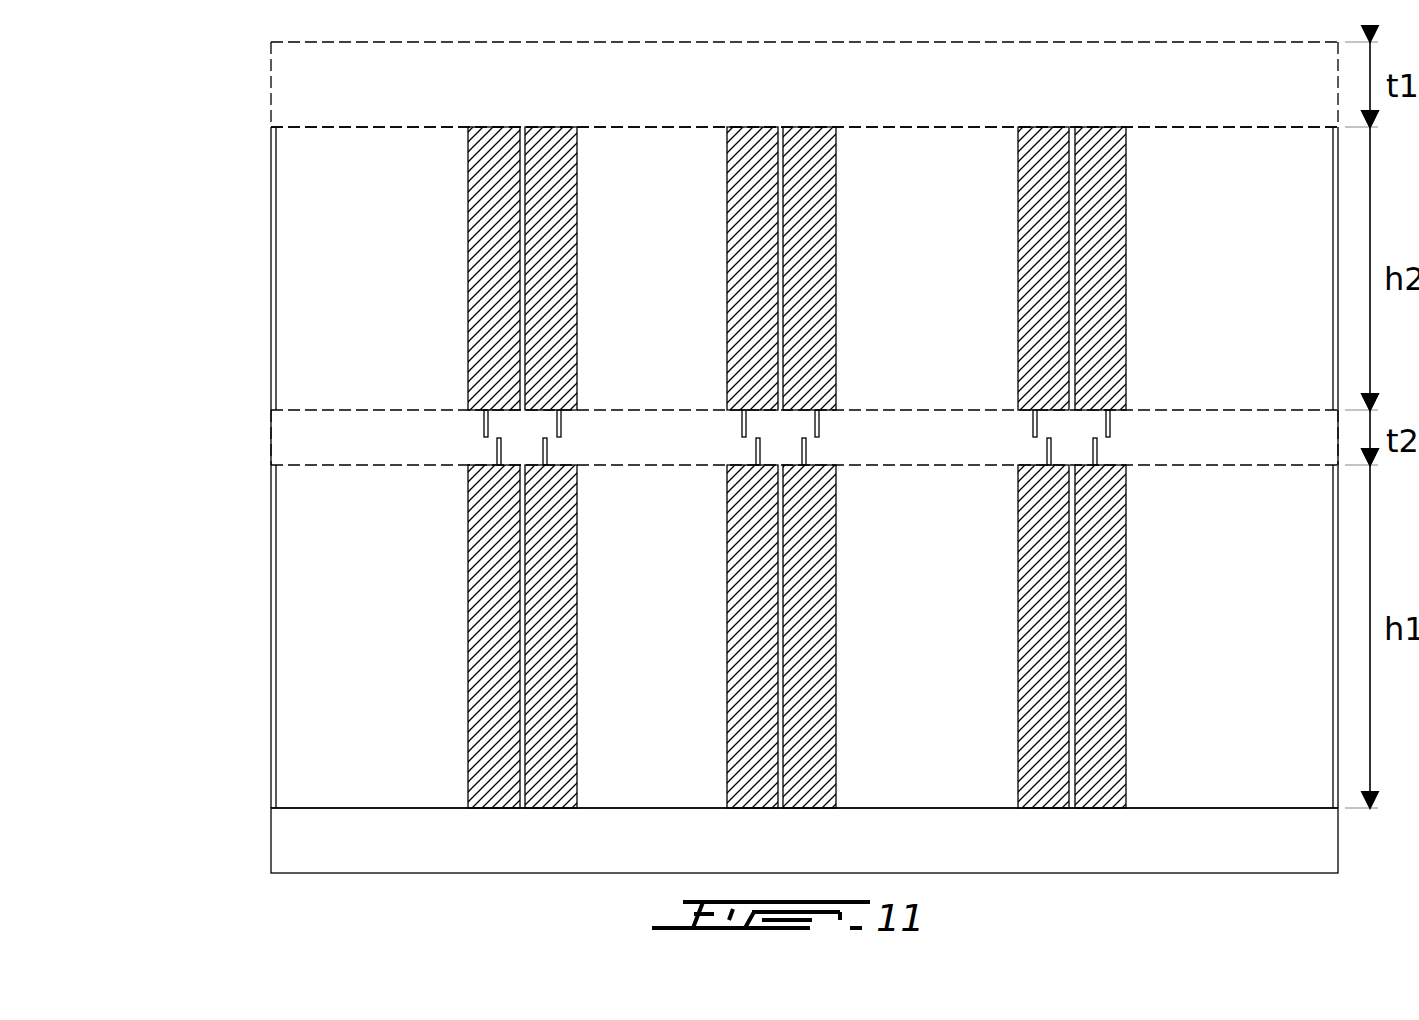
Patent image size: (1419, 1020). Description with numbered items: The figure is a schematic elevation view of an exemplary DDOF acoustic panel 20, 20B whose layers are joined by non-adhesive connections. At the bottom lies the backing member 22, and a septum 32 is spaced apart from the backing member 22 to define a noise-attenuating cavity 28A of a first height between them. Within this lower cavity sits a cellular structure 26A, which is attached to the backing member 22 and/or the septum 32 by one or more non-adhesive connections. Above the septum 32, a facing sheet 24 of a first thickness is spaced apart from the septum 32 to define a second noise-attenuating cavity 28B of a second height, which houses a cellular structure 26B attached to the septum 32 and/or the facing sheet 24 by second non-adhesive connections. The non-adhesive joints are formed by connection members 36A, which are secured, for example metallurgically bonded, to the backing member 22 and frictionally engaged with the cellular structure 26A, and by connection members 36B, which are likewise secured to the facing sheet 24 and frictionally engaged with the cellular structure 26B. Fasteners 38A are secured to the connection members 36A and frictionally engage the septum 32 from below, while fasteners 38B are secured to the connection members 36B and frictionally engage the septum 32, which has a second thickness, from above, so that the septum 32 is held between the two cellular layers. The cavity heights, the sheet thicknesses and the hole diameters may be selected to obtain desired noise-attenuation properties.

The DDOF acoustic panel 20 is at (693, 242).
The DDOF acoustic panel 20B is at (804, 253).
The backing member 22 is at (292, 843).
The facing sheet 24 is at (310, 76).
The cellular structure 26A is at (292, 650).
The cellular structure 26B is at (292, 300).
The noise-attenuating cavity 28A is at (232, 579).
The noise-attenuating cavity 28B is at (232, 237).
The septum 32 is at (292, 432).
The connection members 36A is at (488, 629).
The connection members 36B is at (488, 222).
The fasteners 38A is at (497, 448).
The fasteners 38B is at (484, 425).